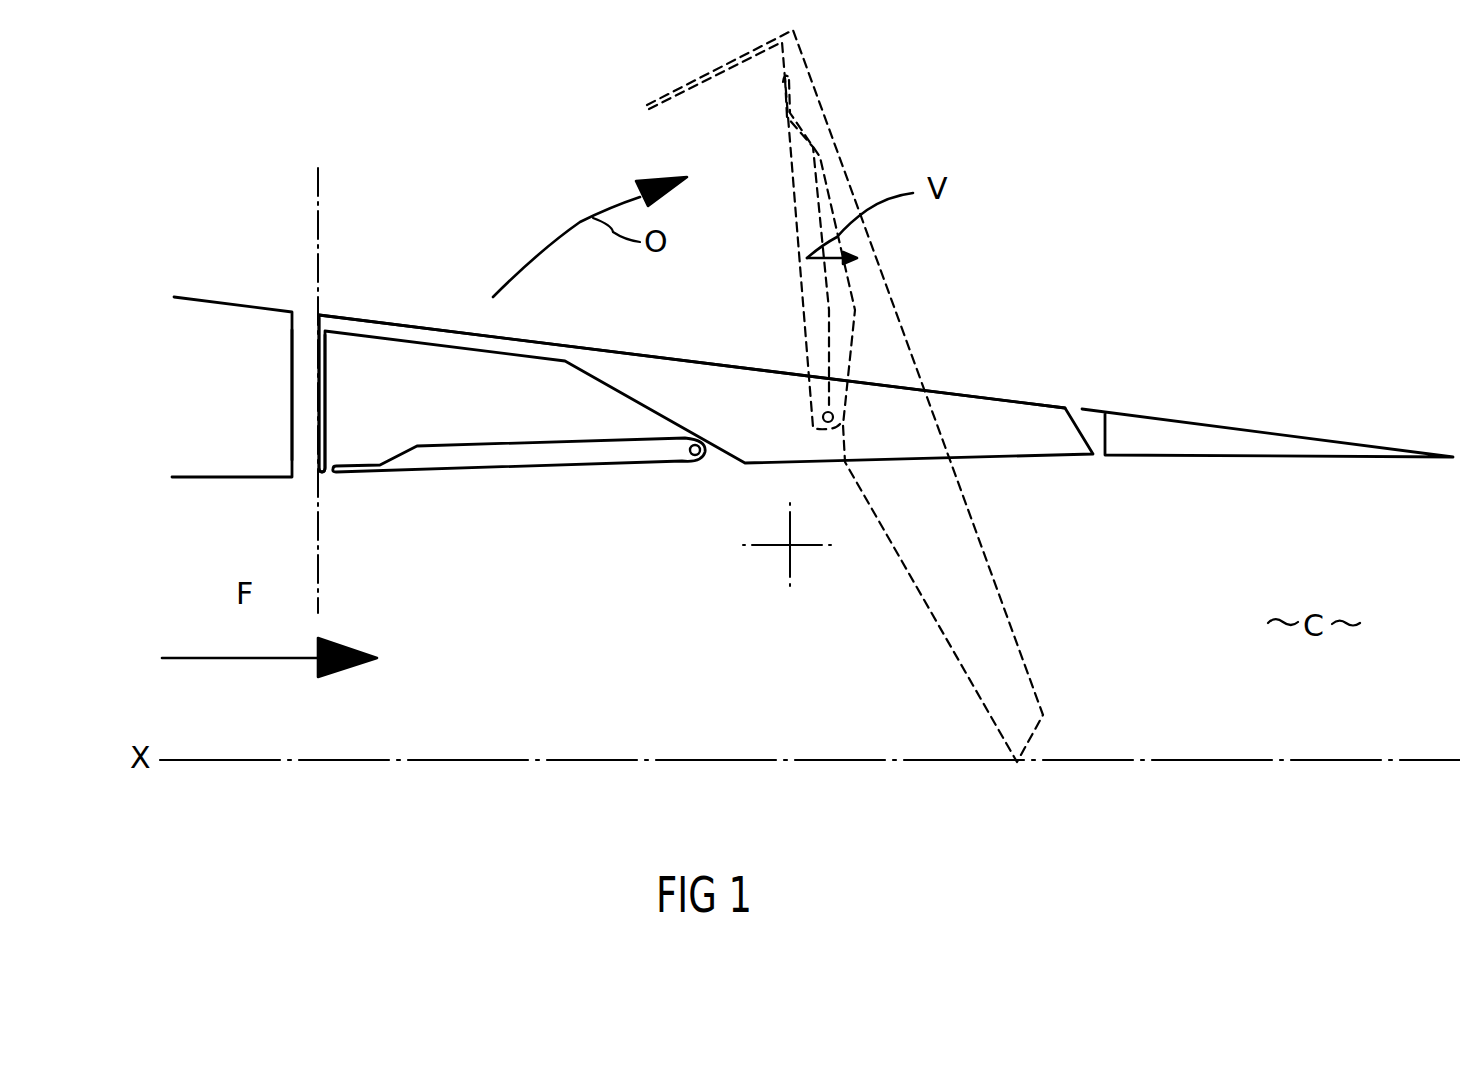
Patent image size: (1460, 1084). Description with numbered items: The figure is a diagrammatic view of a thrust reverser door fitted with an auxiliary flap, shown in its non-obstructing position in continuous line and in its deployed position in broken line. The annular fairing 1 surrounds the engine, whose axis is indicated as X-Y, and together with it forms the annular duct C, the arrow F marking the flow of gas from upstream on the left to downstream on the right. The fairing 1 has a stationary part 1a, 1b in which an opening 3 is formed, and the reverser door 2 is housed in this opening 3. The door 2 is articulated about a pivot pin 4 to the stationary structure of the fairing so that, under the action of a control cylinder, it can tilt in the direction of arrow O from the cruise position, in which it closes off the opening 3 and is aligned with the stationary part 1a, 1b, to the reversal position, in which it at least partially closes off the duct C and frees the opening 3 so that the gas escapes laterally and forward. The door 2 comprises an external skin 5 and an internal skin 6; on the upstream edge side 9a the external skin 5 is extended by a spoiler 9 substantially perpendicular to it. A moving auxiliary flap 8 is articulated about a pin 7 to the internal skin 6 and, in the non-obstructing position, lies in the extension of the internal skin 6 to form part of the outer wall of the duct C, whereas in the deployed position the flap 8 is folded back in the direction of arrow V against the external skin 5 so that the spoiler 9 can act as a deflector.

The fairing 1 is at (781, 285).
The stationary part of the fairing 1a is at (240, 392).
The stationary part of the fairing 1b is at (1163, 438).
The reverser door 2 is at (977, 393).
The opening 3 is at (307, 347).
The pivot pin 4 is at (787, 545).
The external skin 5 is at (443, 327).
The internal skin 6 is at (825, 462).
The pin 7 is at (690, 458).
The auxiliary flap 8 is at (497, 470).
The spoiler 9 is at (324, 397).
The upstream edge side 9a is at (324, 197).